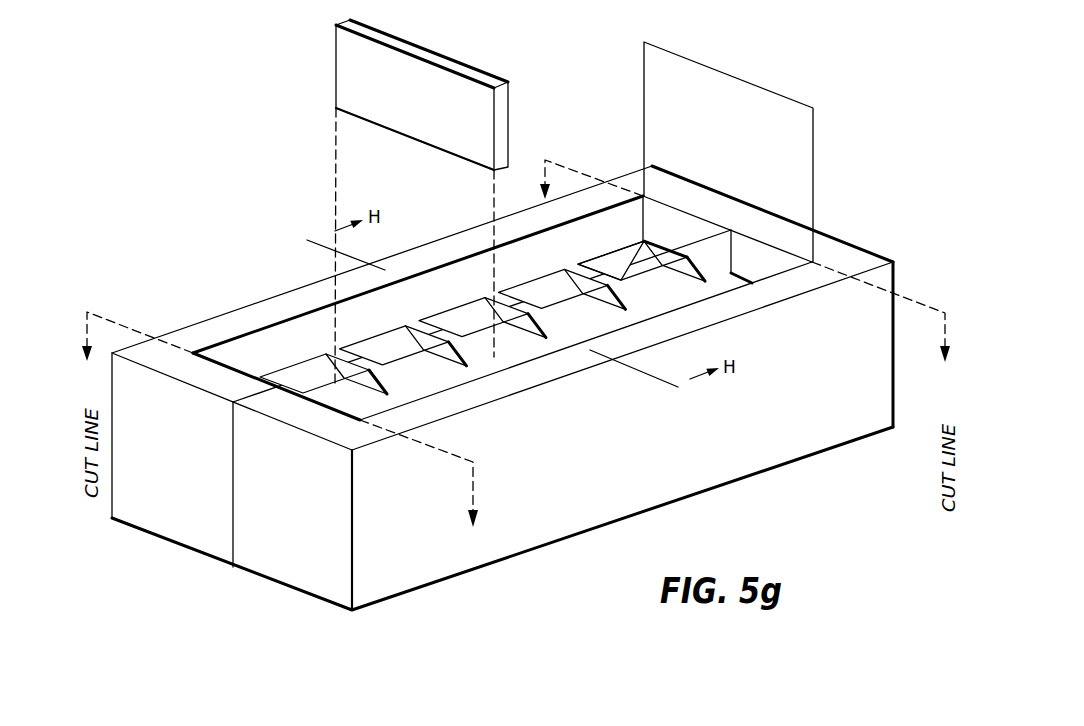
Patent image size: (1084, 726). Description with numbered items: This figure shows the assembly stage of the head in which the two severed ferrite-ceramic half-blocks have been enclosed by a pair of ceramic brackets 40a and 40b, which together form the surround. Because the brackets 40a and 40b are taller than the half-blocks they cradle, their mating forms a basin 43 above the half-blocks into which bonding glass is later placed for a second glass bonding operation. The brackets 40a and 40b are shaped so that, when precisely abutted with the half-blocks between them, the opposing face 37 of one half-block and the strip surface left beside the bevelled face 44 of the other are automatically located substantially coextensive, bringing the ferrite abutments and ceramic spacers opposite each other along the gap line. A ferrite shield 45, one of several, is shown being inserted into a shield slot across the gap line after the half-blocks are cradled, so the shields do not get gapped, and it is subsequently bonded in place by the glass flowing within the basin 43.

The opposing face 37 is at (330, 403).
The basin 43 is at (728, 75).
The bevelled face 44 is at (337, 386).
The ferrite shield 45 is at (430, 55).
The ceramic bracket 40a is at (722, 207).
The ceramic bracket 40b is at (817, 247).